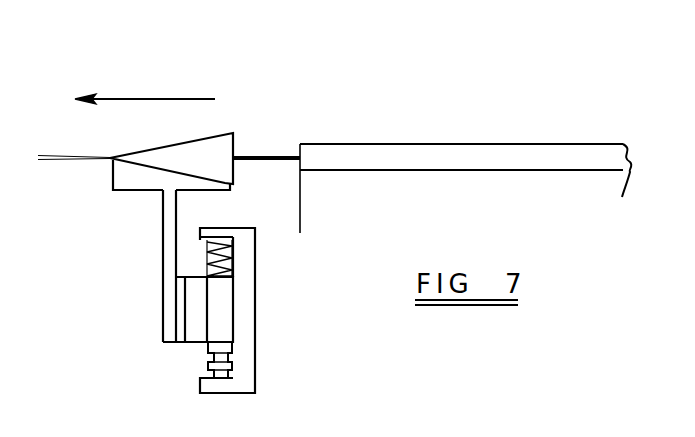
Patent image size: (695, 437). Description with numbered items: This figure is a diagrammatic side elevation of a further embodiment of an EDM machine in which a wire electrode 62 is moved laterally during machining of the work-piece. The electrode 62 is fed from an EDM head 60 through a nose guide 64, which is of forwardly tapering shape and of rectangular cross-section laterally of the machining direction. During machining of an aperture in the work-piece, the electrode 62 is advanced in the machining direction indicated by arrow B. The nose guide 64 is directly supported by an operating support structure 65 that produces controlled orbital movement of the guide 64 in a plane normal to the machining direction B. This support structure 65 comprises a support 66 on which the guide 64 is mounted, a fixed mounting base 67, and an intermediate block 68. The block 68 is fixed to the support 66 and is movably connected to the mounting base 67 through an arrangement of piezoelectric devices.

The EDM head 60 is at (487, 153).
The wire electrode 62 is at (272, 157).
The nose guide 64 is at (214, 134).
The operating support structure 65 is at (150, 313).
The support 66 is at (133, 176).
The fixed mounting base 67 is at (243, 305).
The intermediate block 68 is at (195, 330).
The machining direction B is at (137, 98).